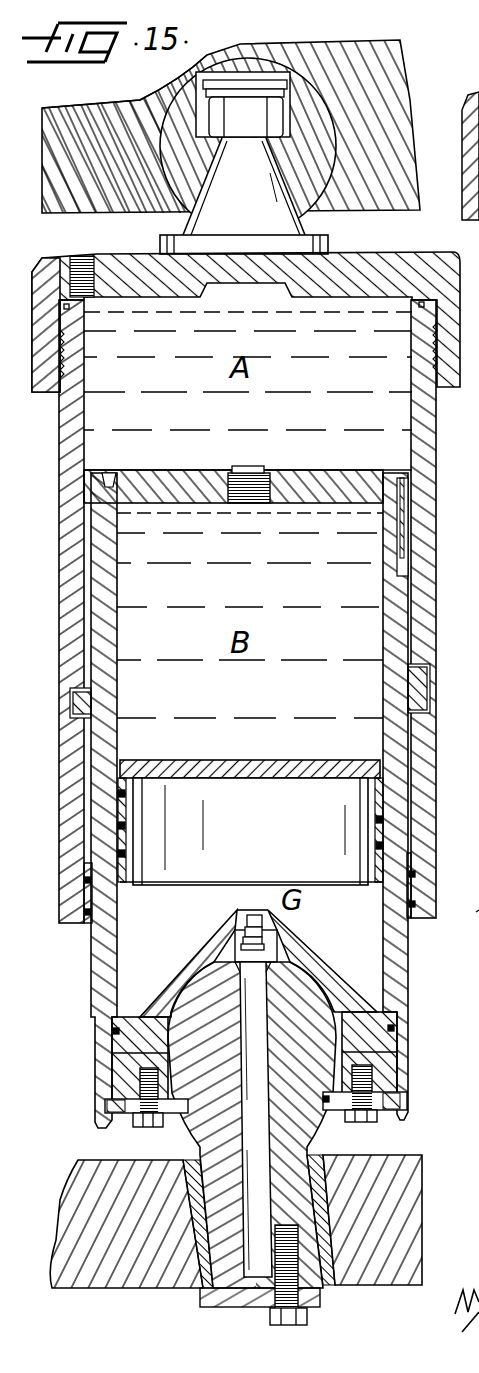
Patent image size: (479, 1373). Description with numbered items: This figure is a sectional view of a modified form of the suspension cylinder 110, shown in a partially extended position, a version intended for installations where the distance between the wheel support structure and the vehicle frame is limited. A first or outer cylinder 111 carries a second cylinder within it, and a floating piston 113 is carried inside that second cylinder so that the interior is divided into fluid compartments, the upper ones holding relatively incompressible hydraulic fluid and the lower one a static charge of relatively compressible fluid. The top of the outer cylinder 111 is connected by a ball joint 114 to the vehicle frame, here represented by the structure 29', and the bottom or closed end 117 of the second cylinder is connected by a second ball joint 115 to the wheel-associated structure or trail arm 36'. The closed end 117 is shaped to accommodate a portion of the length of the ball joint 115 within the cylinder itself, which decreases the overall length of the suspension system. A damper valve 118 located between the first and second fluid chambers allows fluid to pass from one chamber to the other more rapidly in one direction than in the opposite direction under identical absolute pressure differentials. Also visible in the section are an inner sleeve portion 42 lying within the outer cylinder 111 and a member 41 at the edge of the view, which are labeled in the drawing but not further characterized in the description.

The socket block 29' is at (253, 122).
The ball joint 114 is at (305, 113).
The suspension cylinder 110 is at (364, 264).
The first or outer cylinder 111 is at (72, 453).
The inner cylinder 42 is at (106, 934).
The damper valve 118 is at (256, 473).
The floating piston 113 is at (330, 736).
The ball joint 115 is at (298, 990).
The closed end 117 is at (383, 1074).
The trail arm 36' is at (261, 1233).
The member 41 is at (472, 918).